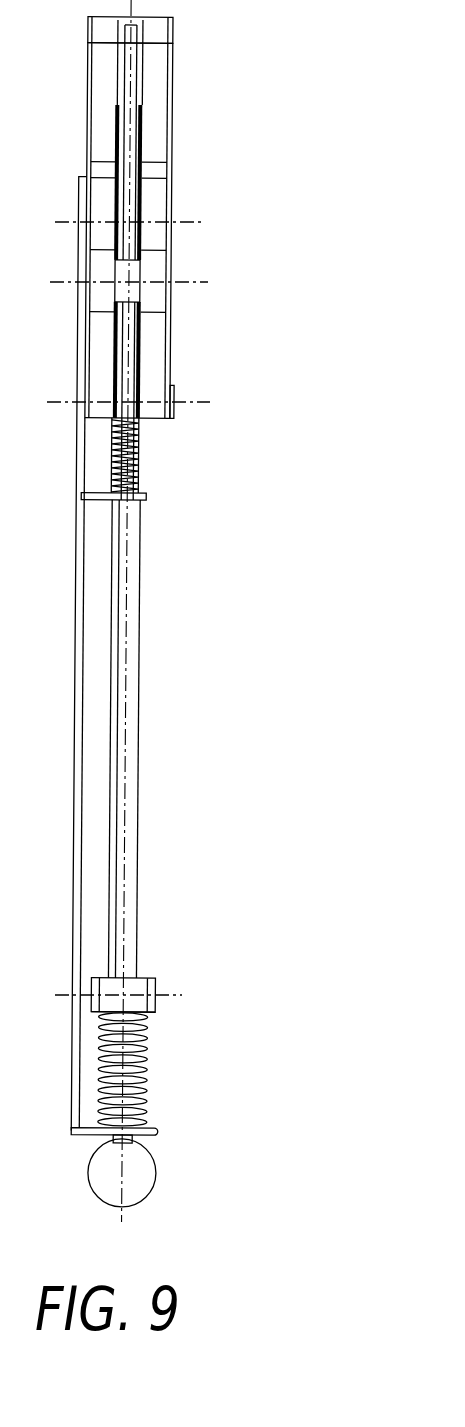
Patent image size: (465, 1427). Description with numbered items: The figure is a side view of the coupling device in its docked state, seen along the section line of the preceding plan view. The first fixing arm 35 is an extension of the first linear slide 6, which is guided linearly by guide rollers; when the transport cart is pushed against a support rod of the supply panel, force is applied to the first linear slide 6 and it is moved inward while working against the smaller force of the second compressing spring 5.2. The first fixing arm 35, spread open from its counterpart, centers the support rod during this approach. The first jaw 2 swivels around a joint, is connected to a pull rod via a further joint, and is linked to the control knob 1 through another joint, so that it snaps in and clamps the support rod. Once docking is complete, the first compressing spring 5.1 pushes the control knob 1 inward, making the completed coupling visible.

The control knob 1 is at (138, 1173).
The first jaw 2 is at (160, 32).
The first linear slide 6 is at (150, 358).
The first fixing arm 35 is at (132, 70).
The first compressing spring 5.1 is at (147, 1068).
The second compressing spring 5.2 is at (142, 453).